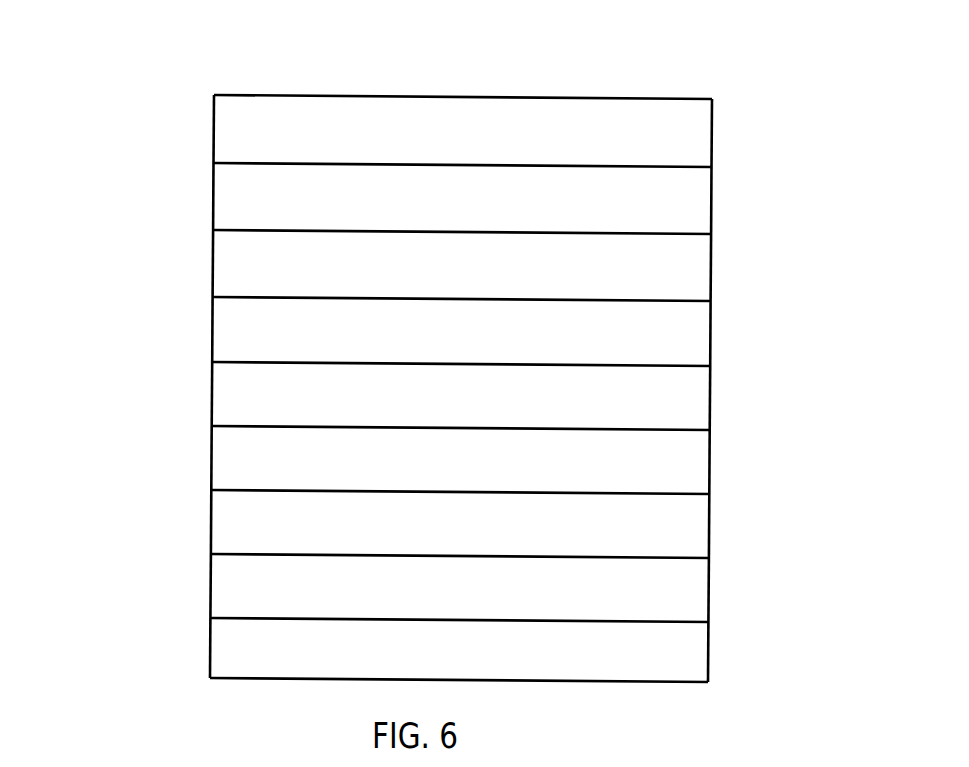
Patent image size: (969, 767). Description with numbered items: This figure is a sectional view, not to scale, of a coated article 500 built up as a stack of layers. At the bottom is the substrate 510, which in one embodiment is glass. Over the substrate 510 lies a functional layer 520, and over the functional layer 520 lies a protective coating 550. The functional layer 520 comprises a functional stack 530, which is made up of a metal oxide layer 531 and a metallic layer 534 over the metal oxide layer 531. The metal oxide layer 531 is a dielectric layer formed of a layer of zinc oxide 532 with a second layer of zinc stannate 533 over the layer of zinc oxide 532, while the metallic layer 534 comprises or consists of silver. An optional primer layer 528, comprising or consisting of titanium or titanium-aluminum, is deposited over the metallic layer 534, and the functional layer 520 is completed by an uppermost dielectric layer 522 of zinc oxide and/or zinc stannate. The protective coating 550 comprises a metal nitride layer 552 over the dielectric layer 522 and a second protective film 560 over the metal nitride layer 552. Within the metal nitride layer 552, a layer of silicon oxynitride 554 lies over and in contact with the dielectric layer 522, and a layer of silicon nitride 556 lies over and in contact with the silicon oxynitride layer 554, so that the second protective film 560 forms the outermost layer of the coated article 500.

The coated article 500 is at (604, 73).
The substrate 510 is at (459, 650).
The functional layer 520 is at (715, 301).
The dielectric layer 522 is at (461, 331).
The primer layer 528 is at (461, 396).
The functional stack 530 is at (212, 426).
The metal oxide layer 531 is at (203, 495).
The layer of zinc oxide 532 is at (459, 588).
The layer of zinc stannate 533 is at (460, 524).
The metallic layer 534 is at (460, 460).
The protective coating 550 is at (718, 100).
The metal nitride layer 552 is at (203, 172).
The silicon oxynitride layer 554 is at (462, 265).
The silicon nitride layer 556 is at (462, 198).
The second protective film 560 is at (463, 131).